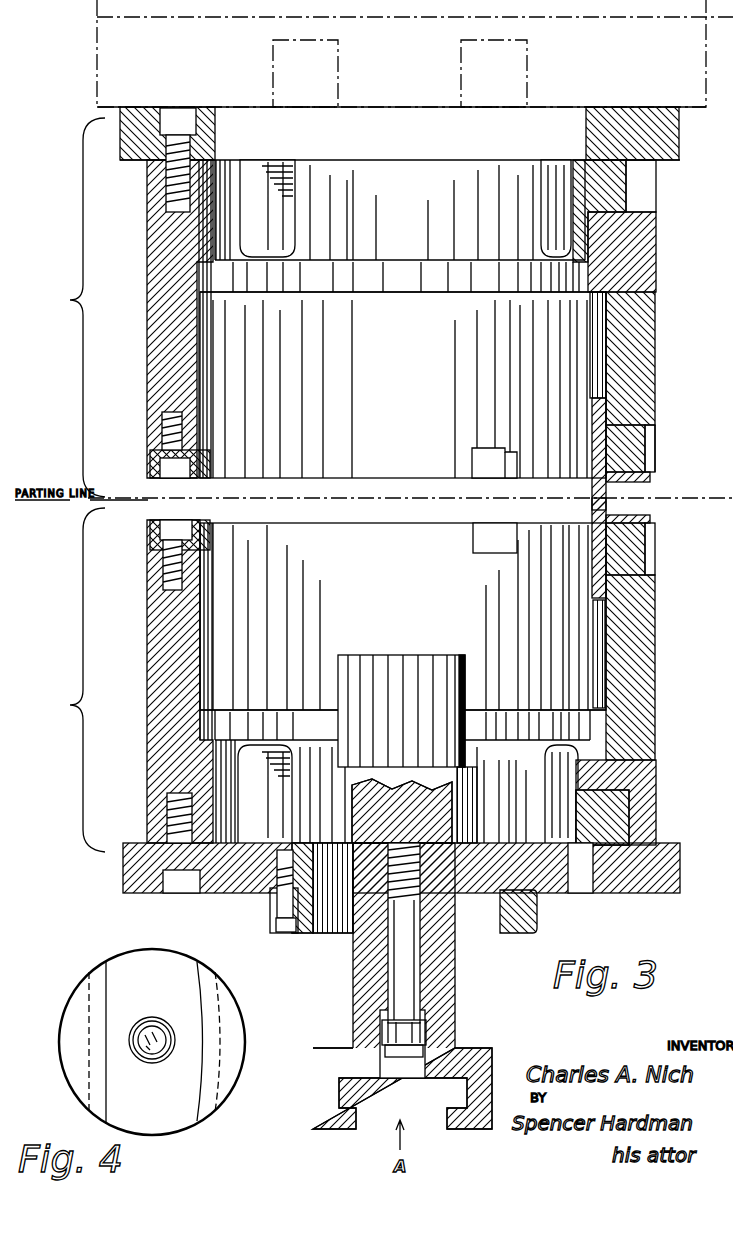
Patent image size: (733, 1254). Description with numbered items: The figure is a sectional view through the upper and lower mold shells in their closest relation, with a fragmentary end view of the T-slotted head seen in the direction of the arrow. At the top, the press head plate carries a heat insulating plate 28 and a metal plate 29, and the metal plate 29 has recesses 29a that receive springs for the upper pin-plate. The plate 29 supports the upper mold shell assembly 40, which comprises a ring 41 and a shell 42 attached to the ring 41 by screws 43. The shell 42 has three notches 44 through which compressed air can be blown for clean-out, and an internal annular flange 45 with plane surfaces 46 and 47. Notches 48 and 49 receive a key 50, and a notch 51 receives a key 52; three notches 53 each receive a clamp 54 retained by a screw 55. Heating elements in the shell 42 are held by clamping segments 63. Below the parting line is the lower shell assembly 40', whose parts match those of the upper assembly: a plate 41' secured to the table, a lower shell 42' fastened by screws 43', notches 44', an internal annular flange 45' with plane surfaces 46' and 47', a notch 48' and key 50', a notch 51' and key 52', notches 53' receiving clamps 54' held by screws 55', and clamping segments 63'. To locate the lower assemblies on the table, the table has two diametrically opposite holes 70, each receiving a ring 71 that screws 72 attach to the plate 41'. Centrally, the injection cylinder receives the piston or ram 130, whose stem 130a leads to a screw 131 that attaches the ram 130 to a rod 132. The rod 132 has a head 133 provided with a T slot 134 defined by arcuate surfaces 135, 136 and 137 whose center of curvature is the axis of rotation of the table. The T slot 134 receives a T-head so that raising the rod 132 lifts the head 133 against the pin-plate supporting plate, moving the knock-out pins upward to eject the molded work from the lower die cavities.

In FIG. 3, the heat insulating plate 28 is at (96, 15).
In FIG. 3, the metal plate 29 is at (96, 73).
In FIG. 3, the recesses 29a is at (273, 55).
In FIG. 3, the upper mold shell assembly 40 is at (117, 307).
In FIG. 3, the ring 41 is at (423, 133).
In FIG. 3, the shell 42 is at (655, 382).
In FIG. 3, the screws 43 is at (174, 144).
In FIG. 3, the notches 44 is at (405, 208).
In FIG. 3, the internal annular flange 45 is at (403, 385).
In FIG. 3, the plane surface 46 is at (403, 226).
In FIG. 3, the plane surface 47 is at (299, 319).
In FIG. 3, the notch 48 is at (660, 189).
In FIG. 3, the notch 49 is at (588, 240).
In FIG. 3, the key 50 is at (634, 211).
In FIG. 3, the notch 51 is at (651, 447).
In FIG. 3, the key 52 is at (571, 401).
In FIG. 3, the notches 53 is at (307, 455).
In FIG. 3, the clamp 54 is at (201, 473).
In FIG. 3, the screw 55 is at (175, 480).
In FIG. 3, the clamping segments 63 is at (650, 478).
In FIG. 3, the lower shell assembly 40' is at (115, 680).
In FIG. 3, the plate 41' is at (421, 888).
In FIG. 3, the lower shell 42' is at (657, 667).
In FIG. 3, the screws 43' is at (167, 857).
In FIG. 3, the notches 44' is at (408, 794).
In FIG. 3, the internal annular flange 45' is at (403, 616).
In FIG. 3, the plane surface 46' is at (403, 776).
In FIG. 3, the plane surface 47' is at (263, 683).
In FIG. 3, the notch 48' is at (638, 802).
In FIG. 3, the key 50' is at (638, 817).
In FIG. 3, the notch 51' is at (630, 549).
In FIG. 3, the key 52' is at (571, 548).
In FIG. 3, the notches 53' is at (305, 545).
In FIG. 3, the clamp 54' is at (152, 551).
In FIG. 3, the screw 55' is at (154, 525).
In FIG. 3, the clamping segments 63' is at (650, 509).
In FIG. 3, the holes 70 is at (270, 910).
In FIG. 3, the ring 71 is at (538, 915).
In FIG. 3, the screws 72 is at (283, 930).
In FIG. 3, the piston or ram 130 is at (419, 655).
In FIG. 3, the plunger stem 130a is at (440, 798).
In FIG. 3, the screw 131 is at (406, 1060).
In FIG. 4, the screw 131 is at (155, 1024).
In FIG. 3, the rod 132 is at (456, 978).
In FIG. 3, the head 133 is at (492, 1050).
In FIG. 3, the T slot 134 is at (447, 1095).
In FIG. 4, the arcuate surface 135 is at (86, 1023).
In FIG. 4, the arcuate surface 136 is at (215, 1085).
In FIG. 4, the arcuate surface 137 is at (198, 999).